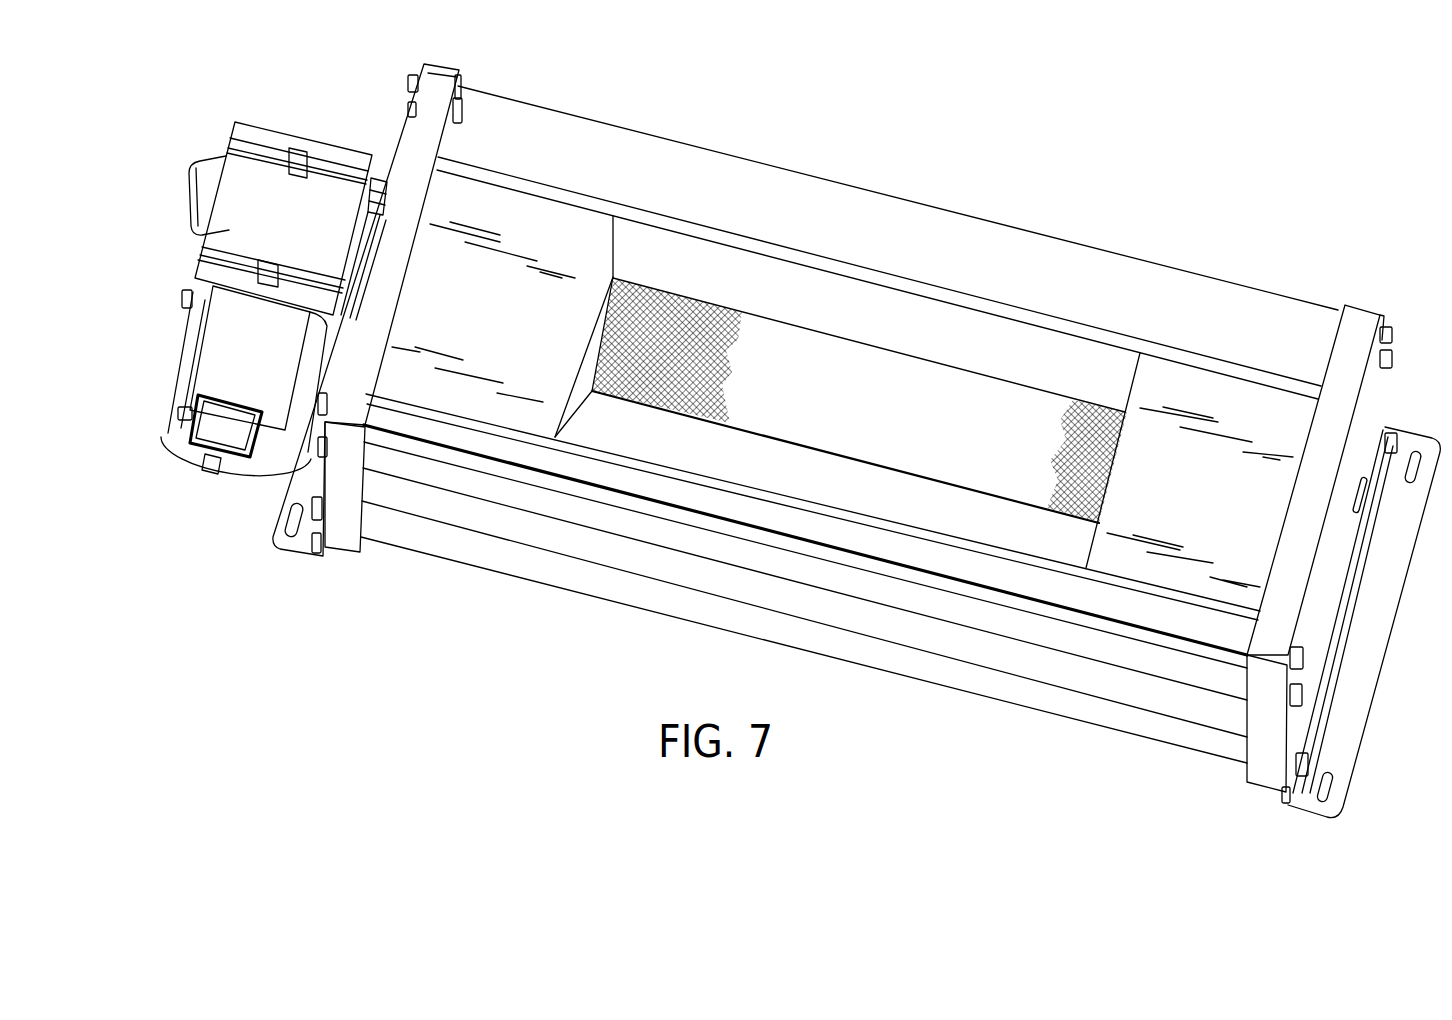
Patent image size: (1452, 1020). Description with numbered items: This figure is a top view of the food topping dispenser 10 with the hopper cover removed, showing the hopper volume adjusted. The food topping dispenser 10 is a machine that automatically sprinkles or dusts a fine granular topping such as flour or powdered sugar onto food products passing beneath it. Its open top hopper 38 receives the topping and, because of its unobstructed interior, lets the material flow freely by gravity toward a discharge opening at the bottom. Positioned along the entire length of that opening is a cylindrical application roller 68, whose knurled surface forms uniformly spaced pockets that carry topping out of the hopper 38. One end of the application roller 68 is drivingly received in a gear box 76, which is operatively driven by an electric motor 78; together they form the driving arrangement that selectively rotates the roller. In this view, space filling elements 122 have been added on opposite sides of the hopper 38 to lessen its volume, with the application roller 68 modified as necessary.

The food topping dispenser 10 is at (1036, 194).
The hopper 38 is at (720, 279).
The application roller 68 is at (923, 370).
The gear box 76 is at (206, 196).
The electric motor 78 is at (215, 355).
The space filling elements 122 is at (532, 218).